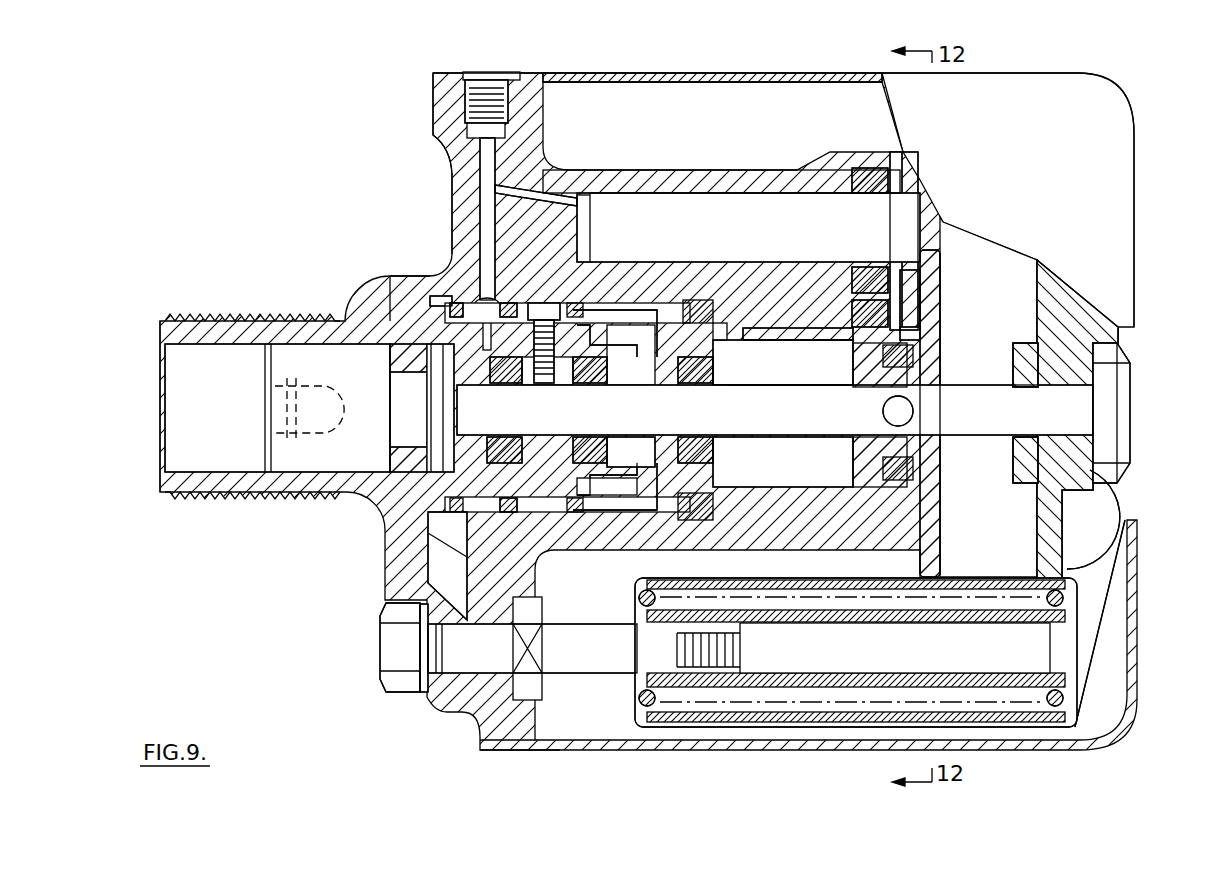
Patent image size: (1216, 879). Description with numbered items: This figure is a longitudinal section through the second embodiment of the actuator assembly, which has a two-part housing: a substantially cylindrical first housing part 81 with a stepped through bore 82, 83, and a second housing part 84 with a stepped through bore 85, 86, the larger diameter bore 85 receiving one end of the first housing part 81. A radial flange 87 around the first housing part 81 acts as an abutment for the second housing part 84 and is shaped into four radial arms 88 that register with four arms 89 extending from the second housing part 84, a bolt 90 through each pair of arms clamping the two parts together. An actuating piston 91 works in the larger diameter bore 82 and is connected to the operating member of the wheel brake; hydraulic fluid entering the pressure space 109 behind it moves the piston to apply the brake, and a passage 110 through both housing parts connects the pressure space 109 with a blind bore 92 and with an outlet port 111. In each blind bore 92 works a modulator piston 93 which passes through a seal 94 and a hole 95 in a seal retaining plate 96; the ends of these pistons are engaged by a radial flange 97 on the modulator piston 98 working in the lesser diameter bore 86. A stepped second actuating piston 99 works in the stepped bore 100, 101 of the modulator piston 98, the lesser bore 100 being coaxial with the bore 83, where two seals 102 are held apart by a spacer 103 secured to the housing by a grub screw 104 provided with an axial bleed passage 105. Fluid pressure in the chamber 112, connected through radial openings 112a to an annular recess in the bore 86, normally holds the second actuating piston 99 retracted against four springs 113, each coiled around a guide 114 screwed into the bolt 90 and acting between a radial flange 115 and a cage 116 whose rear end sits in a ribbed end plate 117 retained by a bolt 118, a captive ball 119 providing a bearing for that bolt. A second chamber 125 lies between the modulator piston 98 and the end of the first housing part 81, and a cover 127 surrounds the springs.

The first housing part 81 is at (357, 300).
The larger diameter bore 82 is at (207, 472).
The lesser diameter bore 83 is at (470, 436).
The second housing part 84 is at (683, 160).
The larger diameter bore 85 is at (440, 298).
The lesser diameter bore 86 is at (790, 372).
The radial flange 87 is at (395, 273).
The radial arms 88 is at (440, 700).
The arms 89 is at (490, 720).
The bolt 90 is at (380, 642).
The actuating piston 91 is at (336, 384).
The blind bores 92 is at (718, 203).
The modulator piston 93 is at (852, 242).
The seal 94 is at (863, 168).
The hole 95 is at (923, 190).
The seal retaining plate 96 is at (917, 288).
The radial flange 97 is at (940, 252).
The modulator piston 98 is at (925, 337).
The second actuating piston 99 is at (950, 462).
The lesser diameter bore 100 is at (720, 386).
The larger diameter bore 101 is at (847, 346).
The seals 102 is at (503, 385).
The spacer 103 is at (563, 384).
The gasket 104 is at (530, 303).
The axial bleed passage 105 is at (553, 306).
The pressure space 109 is at (405, 510).
The passage 110 is at (487, 227).
The outlet port 111 is at (478, 84).
The chamber 112 is at (748, 466).
The radial openings 112a is at (746, 334).
The springs 113 is at (640, 698).
The guide 114 is at (870, 683).
The radial flange 115 is at (1066, 600).
The cage 116 is at (640, 594).
The ribbed end plate 117 is at (1053, 500).
The bolt 118 is at (1077, 400).
The captive ball 119 is at (910, 400).
The chamber 125 is at (615, 462).
The cover 127 is at (733, 74).